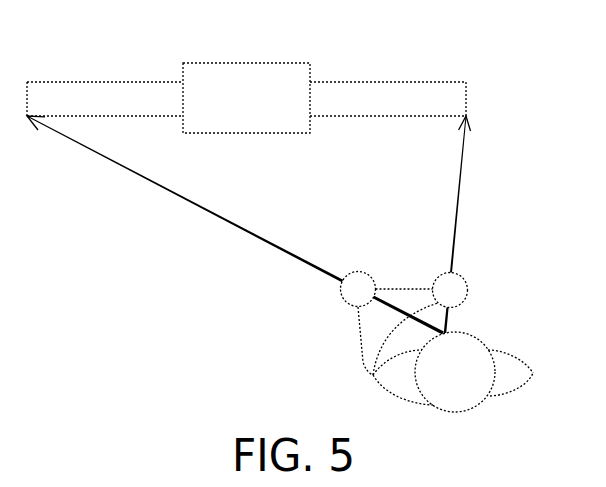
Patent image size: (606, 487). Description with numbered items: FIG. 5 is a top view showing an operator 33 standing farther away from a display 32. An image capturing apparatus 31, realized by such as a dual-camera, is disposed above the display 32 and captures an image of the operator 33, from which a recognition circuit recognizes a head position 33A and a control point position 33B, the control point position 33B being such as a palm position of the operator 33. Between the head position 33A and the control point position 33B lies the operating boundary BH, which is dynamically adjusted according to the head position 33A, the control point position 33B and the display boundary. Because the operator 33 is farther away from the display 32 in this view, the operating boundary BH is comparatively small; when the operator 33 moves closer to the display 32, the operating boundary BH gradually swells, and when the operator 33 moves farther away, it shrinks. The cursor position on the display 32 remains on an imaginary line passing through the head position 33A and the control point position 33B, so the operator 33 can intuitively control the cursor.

The image capturing apparatus 31 is at (247, 63).
The display 32 is at (388, 82).
The operator 33 is at (557, 375).
The head position 33A is at (458, 340).
The control point position 33B is at (352, 293).
The operating boundary BH is at (408, 290).